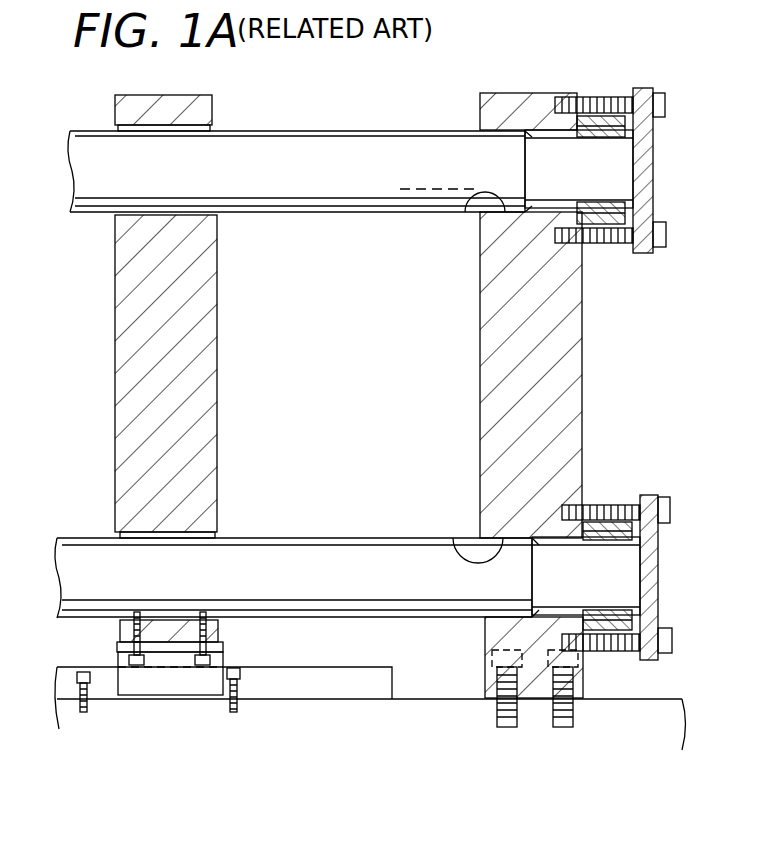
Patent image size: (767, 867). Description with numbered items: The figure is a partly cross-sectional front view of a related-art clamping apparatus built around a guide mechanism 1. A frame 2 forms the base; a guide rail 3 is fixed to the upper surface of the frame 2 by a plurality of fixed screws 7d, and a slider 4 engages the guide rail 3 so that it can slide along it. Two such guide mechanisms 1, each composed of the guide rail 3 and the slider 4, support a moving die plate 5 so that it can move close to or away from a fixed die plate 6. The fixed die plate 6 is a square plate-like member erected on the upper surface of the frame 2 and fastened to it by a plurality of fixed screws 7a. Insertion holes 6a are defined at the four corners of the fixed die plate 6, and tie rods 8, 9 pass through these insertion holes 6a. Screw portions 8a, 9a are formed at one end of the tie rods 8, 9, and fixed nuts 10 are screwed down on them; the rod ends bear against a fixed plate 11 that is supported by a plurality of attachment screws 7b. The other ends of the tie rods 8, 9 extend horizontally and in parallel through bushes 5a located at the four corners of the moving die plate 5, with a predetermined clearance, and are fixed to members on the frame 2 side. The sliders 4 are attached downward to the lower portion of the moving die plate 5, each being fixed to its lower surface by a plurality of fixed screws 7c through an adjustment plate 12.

The guide mechanism 1 is at (426, 106).
The frame 2 is at (653, 707).
The guide rail 3 is at (343, 673).
The slider 4 is at (192, 682).
The moving die plate 5 is at (205, 385).
The bush 5a is at (135, 125).
The fixed die plate 6 is at (555, 370).
The insertion hole 6a is at (468, 207).
The fixed screw 7a is at (510, 730).
The attachment screw 7b is at (658, 103).
The fixed screw 7c is at (118, 658).
The fixed screw 7d is at (82, 713).
The tie rod 8 is at (315, 155).
The screw portion 8a is at (555, 155).
The tie rod 9 is at (345, 555).
The screw portion 9a is at (615, 560).
The fixed nut 10 is at (620, 120).
The fixed plate 11 is at (643, 177).
The adjustment plate 12 is at (213, 647).